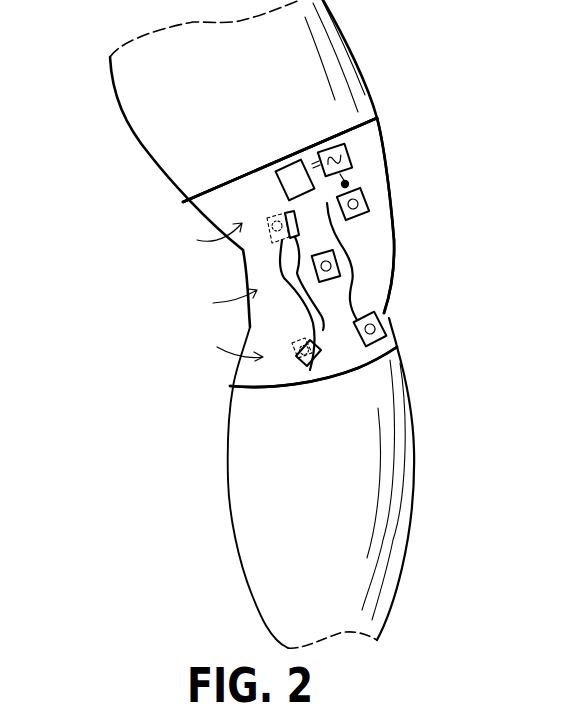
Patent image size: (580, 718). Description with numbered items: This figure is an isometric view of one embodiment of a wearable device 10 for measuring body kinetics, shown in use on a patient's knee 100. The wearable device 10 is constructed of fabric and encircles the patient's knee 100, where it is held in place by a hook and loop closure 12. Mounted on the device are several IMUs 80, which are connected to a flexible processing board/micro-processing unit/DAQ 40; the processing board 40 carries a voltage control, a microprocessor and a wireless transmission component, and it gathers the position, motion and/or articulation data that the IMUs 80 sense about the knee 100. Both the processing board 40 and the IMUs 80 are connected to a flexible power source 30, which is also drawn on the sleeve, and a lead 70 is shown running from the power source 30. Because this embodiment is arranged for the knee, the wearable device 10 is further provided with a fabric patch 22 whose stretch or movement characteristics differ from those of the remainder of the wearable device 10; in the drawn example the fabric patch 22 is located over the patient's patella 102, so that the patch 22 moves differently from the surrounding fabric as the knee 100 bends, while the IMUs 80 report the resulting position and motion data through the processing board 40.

The wearable device 10 is at (480, 211).
The hook and loop closure 12 is at (247, 265).
The fabric patch 22 is at (338, 250).
The flexible power source 30 is at (350, 155).
The flexible processing board/micro-processing unit/DAQ 40 is at (283, 165).
The connector / power source lead 70 is at (349, 182).
The IMUs 80 is at (363, 193).
The patient's knee 100 is at (386, 225).
The patient's patella 102 is at (390, 281).